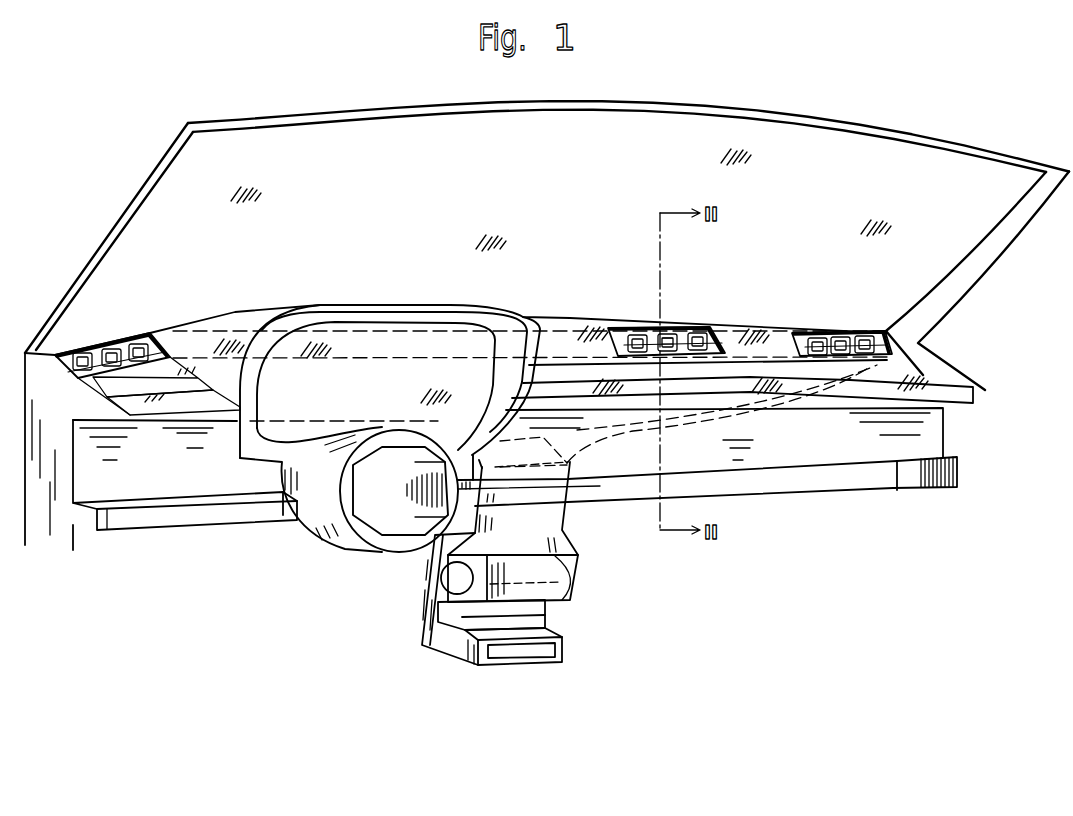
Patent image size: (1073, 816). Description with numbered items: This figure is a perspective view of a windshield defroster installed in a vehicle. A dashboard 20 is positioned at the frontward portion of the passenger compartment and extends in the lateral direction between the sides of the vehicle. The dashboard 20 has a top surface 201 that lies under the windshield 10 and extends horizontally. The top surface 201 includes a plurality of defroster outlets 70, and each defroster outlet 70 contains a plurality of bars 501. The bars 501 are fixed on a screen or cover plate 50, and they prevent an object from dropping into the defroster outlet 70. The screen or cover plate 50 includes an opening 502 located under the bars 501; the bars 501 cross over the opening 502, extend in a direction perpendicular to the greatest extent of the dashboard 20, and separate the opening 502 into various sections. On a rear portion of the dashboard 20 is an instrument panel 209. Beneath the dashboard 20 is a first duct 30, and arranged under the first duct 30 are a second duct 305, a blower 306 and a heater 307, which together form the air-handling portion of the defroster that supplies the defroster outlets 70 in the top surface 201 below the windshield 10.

The windshield 10 is at (713, 133).
The dashboard 20 is at (930, 383).
The first duct 30 is at (683, 430).
The screen or cover plate 50 is at (93, 352).
The defroster outlet 70 is at (120, 342).
The top surface 201 is at (770, 337).
The instrument panel 209 is at (275, 432).
The second duct 305 is at (545, 515).
The blower 306 is at (550, 583).
The heater 307 is at (548, 622).
The bars 501 is at (160, 343).
The opening 502 is at (668, 327).